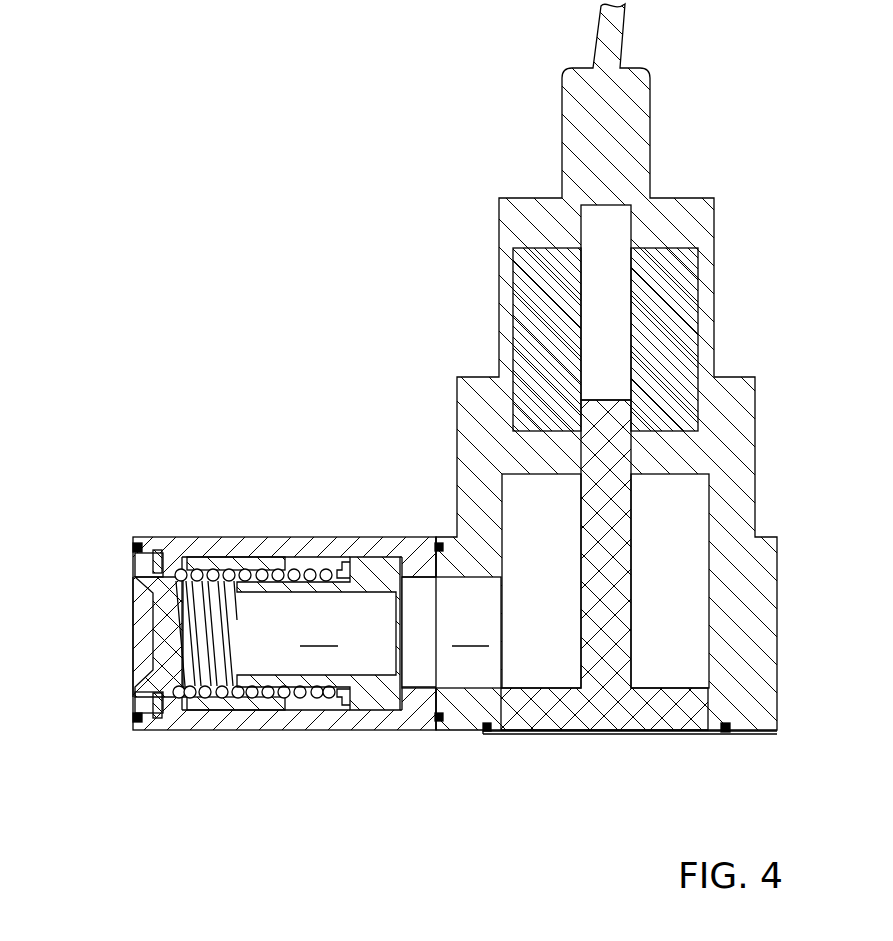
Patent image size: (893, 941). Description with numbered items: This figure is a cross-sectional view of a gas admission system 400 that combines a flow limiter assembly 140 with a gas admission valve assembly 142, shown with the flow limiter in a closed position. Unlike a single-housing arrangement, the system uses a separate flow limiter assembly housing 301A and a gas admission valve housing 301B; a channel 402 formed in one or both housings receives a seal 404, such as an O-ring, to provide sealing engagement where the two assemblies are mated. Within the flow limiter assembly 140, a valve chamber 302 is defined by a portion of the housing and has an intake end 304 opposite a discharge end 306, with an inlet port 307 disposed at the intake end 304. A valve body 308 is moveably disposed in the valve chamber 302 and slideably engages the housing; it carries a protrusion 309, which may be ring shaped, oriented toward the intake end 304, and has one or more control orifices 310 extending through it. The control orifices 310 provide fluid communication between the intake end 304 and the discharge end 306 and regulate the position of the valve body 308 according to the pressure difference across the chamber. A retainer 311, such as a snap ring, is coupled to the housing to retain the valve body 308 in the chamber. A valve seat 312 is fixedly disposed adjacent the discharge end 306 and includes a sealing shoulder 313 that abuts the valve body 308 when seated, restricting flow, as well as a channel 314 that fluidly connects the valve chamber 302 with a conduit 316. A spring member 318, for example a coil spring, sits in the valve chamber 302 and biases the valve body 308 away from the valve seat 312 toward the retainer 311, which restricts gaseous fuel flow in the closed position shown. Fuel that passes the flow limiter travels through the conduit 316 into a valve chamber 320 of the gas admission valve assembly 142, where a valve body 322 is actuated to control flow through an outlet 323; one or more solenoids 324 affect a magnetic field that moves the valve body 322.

The gas admission system 400 is at (235, 38).
The gas admission valve assembly 142 is at (718, 291).
The gas admission valve housing 301B is at (530, 198).
The solenoid 324 is at (545, 336).
The valve chamber 320 is at (708, 639).
The valve body 322 is at (606, 515).
The flow limiter assembly 140 is at (338, 534).
The flow limiter assembly housing 301A is at (295, 537).
The conduit 316 is at (451, 633).
The intake end 304 is at (135, 565).
The retainer 311 is at (158, 550).
The protrusion 309 is at (140, 690).
The inlet port 307 is at (147, 713).
The sealing shoulder 313 is at (215, 558).
The valve body 308 is at (262, 710).
The control orifice 310 is at (181, 569).
The valve chamber 302 is at (319, 690).
The valve seat 312 is at (363, 695).
The channel 314 is at (319, 635).
The spring member 318 is at (237, 695).
The discharge end 306 is at (390, 697).
The channel 402 is at (440, 542).
The seal 404 is at (412, 552).
The outlet 323 is at (668, 732).